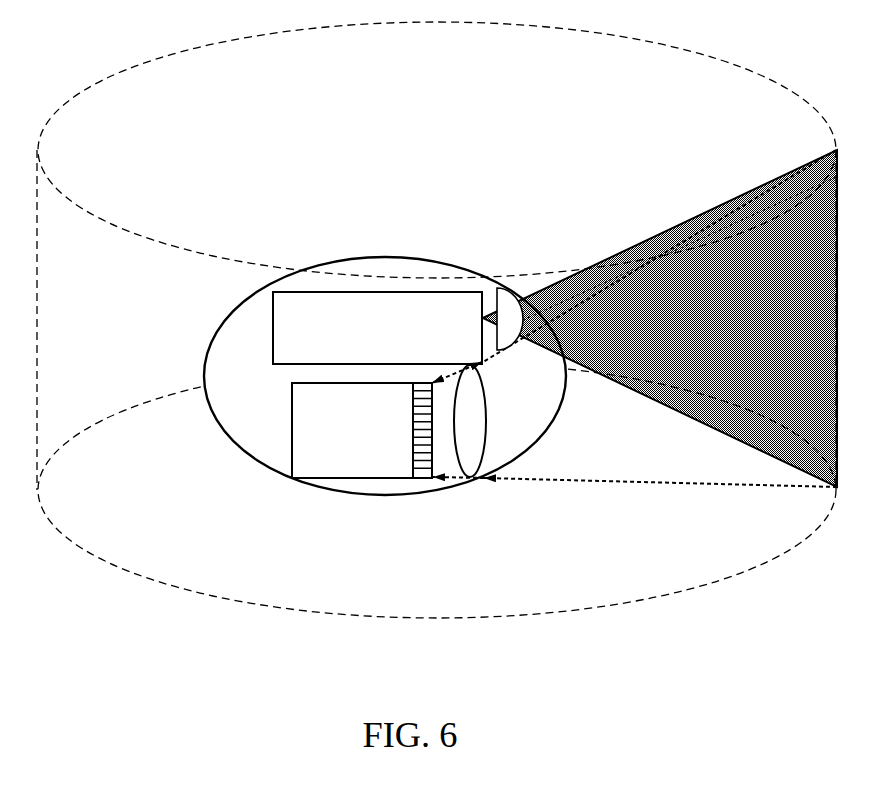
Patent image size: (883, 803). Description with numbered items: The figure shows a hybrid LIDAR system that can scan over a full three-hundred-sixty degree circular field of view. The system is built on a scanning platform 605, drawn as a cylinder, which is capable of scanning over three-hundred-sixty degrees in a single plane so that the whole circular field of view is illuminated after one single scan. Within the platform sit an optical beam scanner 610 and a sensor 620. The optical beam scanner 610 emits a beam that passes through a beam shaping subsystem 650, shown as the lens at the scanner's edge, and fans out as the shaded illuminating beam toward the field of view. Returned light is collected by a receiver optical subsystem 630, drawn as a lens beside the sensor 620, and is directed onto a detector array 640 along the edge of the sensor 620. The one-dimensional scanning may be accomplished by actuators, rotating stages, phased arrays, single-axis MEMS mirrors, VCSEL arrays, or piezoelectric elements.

The scanning platform 605 is at (381, 256).
The optical beam scanner 610 is at (377, 328).
The sensor 620 is at (333, 455).
The receiver optical subsystem 630 is at (487, 422).
The detector array 640 is at (430, 480).
The beam shaping subsystem 650 is at (505, 302).